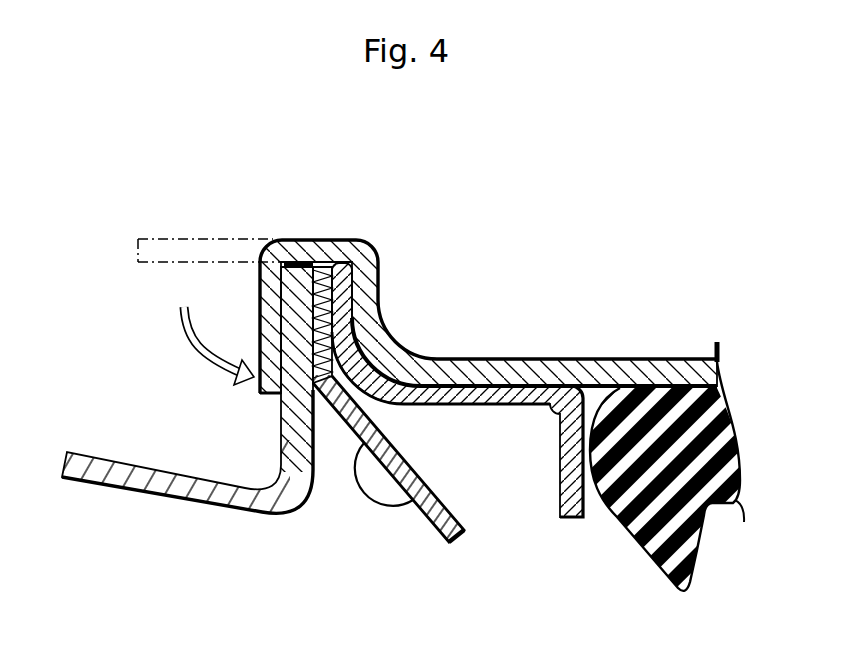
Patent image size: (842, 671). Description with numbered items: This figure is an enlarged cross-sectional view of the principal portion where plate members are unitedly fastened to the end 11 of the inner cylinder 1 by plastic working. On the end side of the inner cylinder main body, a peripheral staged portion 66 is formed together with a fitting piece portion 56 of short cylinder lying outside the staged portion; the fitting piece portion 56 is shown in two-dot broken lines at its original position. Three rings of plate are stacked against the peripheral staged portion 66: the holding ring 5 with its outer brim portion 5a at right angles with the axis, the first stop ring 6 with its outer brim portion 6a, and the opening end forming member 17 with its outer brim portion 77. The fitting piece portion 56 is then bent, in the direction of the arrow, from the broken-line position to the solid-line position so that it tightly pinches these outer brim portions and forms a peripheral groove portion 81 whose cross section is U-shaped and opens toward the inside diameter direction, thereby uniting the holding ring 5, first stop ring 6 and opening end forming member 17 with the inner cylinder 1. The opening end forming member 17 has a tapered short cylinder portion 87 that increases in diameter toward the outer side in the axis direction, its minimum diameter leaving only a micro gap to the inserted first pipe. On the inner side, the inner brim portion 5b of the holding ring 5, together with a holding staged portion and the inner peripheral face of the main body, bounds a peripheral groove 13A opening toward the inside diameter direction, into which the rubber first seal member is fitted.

The inner cylinder 1 is at (675, 355).
The end of the inner cylinder 11 is at (350, 236).
The fitting piece portion 56 is at (272, 297).
The holding ring 5 is at (535, 378).
The outer brim portion 5a is at (356, 288).
The inner brim portion 5b is at (562, 488).
The peripheral staged portion 66 is at (350, 330).
The opening end forming member 17 is at (131, 460).
The tapered short cylinder portion 87 is at (91, 485).
The outer brim portion 77 is at (300, 313).
The peripheral groove portion 81 is at (295, 295).
The first stop ring 6 is at (410, 507).
The outer brim portion 6a is at (300, 348).
The peripheral groove 13A is at (600, 395).